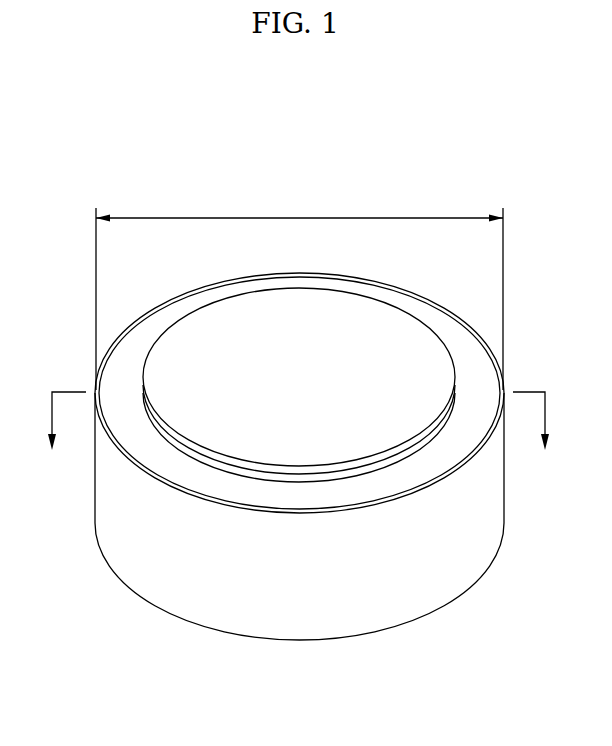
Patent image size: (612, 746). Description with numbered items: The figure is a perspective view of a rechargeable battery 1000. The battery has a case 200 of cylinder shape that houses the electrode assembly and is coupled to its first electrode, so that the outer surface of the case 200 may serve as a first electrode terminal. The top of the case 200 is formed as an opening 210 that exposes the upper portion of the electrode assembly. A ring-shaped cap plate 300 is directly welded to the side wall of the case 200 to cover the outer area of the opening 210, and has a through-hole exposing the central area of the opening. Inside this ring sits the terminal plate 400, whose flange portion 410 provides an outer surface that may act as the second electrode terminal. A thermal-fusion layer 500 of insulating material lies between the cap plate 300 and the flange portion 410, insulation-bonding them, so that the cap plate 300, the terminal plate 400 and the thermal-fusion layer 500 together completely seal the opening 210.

The rechargeable battery 1000 is at (275, 135).
The case 200 is at (298, 627).
The opening 210 is at (299, 288).
The cap plate 300 is at (417, 310).
The terminal plate 400 is at (228, 343).
The flange portion 410 is at (343, 328).
The thermal-fusion layer 500 is at (217, 468).